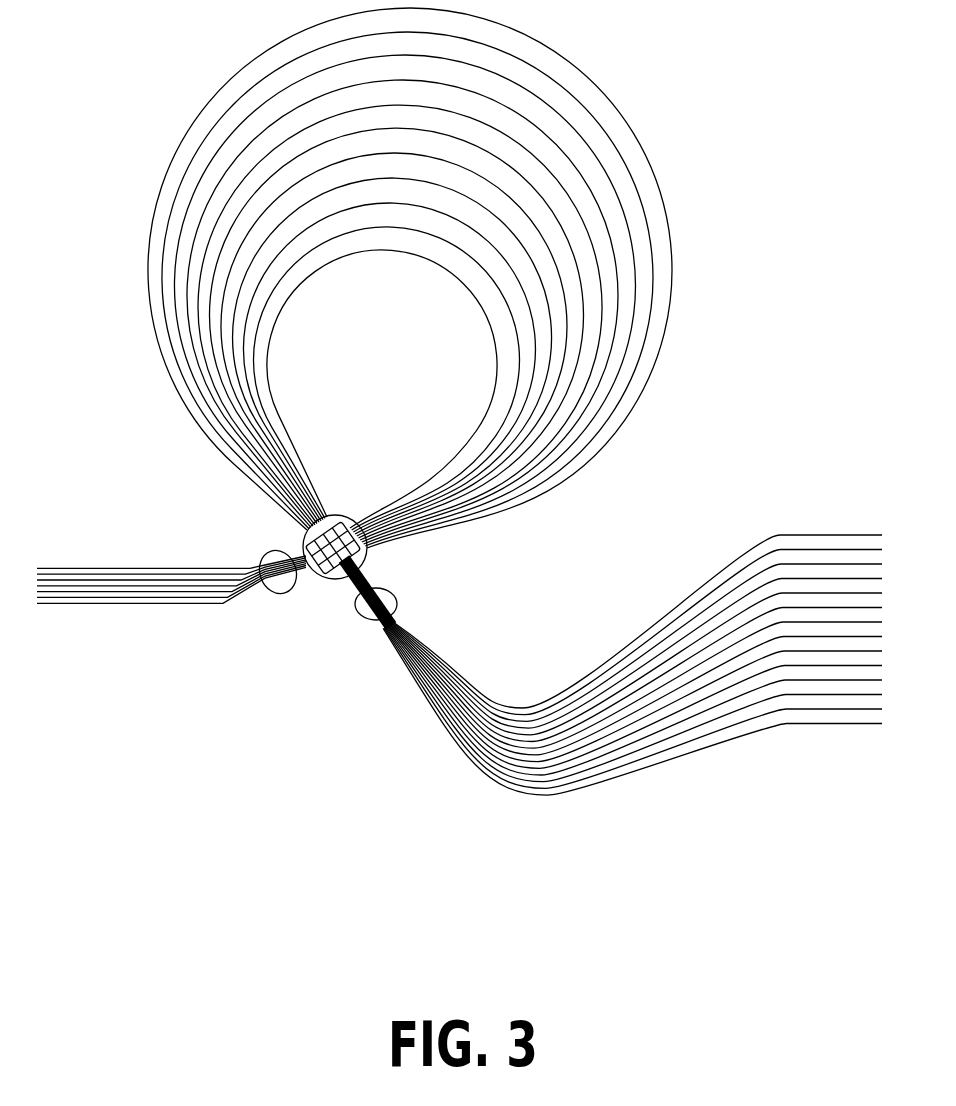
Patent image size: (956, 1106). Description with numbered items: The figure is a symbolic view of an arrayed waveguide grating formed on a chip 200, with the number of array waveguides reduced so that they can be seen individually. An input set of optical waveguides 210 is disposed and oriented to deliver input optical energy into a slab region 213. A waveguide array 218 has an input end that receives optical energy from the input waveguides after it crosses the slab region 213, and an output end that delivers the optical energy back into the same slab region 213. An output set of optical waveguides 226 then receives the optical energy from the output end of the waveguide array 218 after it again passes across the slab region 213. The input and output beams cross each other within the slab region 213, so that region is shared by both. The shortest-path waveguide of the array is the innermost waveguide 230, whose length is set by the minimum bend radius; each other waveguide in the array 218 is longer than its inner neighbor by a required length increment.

The chip 200 is at (138, 81).
The waveguide array 218 is at (604, 181).
The innermost waveguide 230 is at (500, 381).
The slab region 213 is at (338, 515).
The output set of optical waveguides 226 is at (263, 559).
The input set of optical waveguides 210 is at (398, 604).